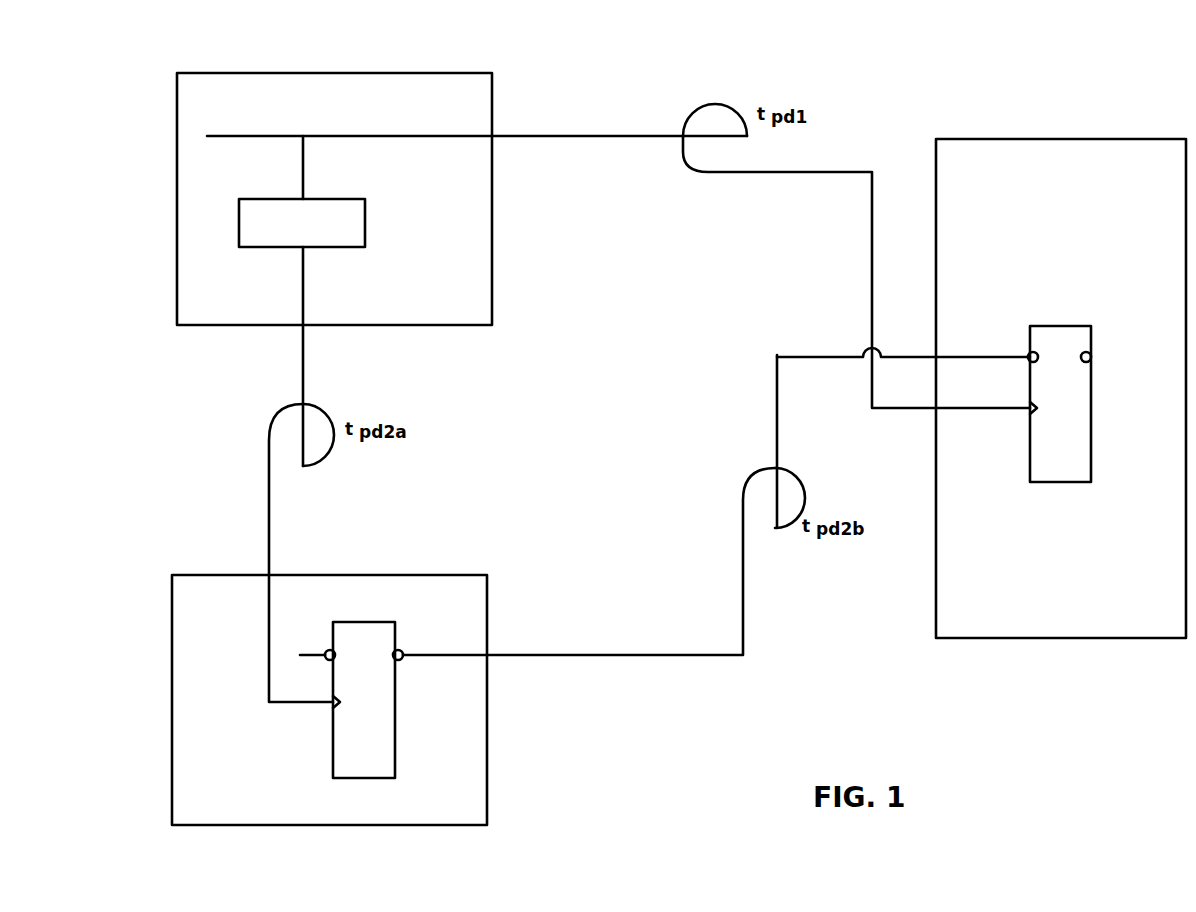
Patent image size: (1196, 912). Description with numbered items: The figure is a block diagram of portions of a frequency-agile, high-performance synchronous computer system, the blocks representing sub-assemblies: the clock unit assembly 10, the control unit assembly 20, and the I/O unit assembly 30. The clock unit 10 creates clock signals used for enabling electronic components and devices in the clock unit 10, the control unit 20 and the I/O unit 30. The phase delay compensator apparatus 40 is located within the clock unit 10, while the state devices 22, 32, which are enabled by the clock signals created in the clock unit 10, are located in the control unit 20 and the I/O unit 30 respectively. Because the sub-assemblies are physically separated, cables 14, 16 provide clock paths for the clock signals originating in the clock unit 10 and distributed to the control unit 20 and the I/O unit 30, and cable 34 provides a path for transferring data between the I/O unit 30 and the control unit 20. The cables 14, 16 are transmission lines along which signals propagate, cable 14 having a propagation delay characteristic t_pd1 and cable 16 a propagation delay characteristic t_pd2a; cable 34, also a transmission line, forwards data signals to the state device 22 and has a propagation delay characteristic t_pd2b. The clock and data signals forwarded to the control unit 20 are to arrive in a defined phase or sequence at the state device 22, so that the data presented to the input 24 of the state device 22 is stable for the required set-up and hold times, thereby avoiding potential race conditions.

The clock unit assembly 10 is at (322, 73).
The cable 14 is at (641, 136).
The cable 16 is at (269, 497).
The control unit assembly 20 is at (1082, 139).
The state device 22 is at (1060, 482).
The input 24 is at (1028, 355).
The I/O unit assembly 30 is at (172, 715).
The state device 32 is at (353, 778).
The cable 34 is at (655, 655).
The phase delay compensator apparatus 40 is at (337, 247).